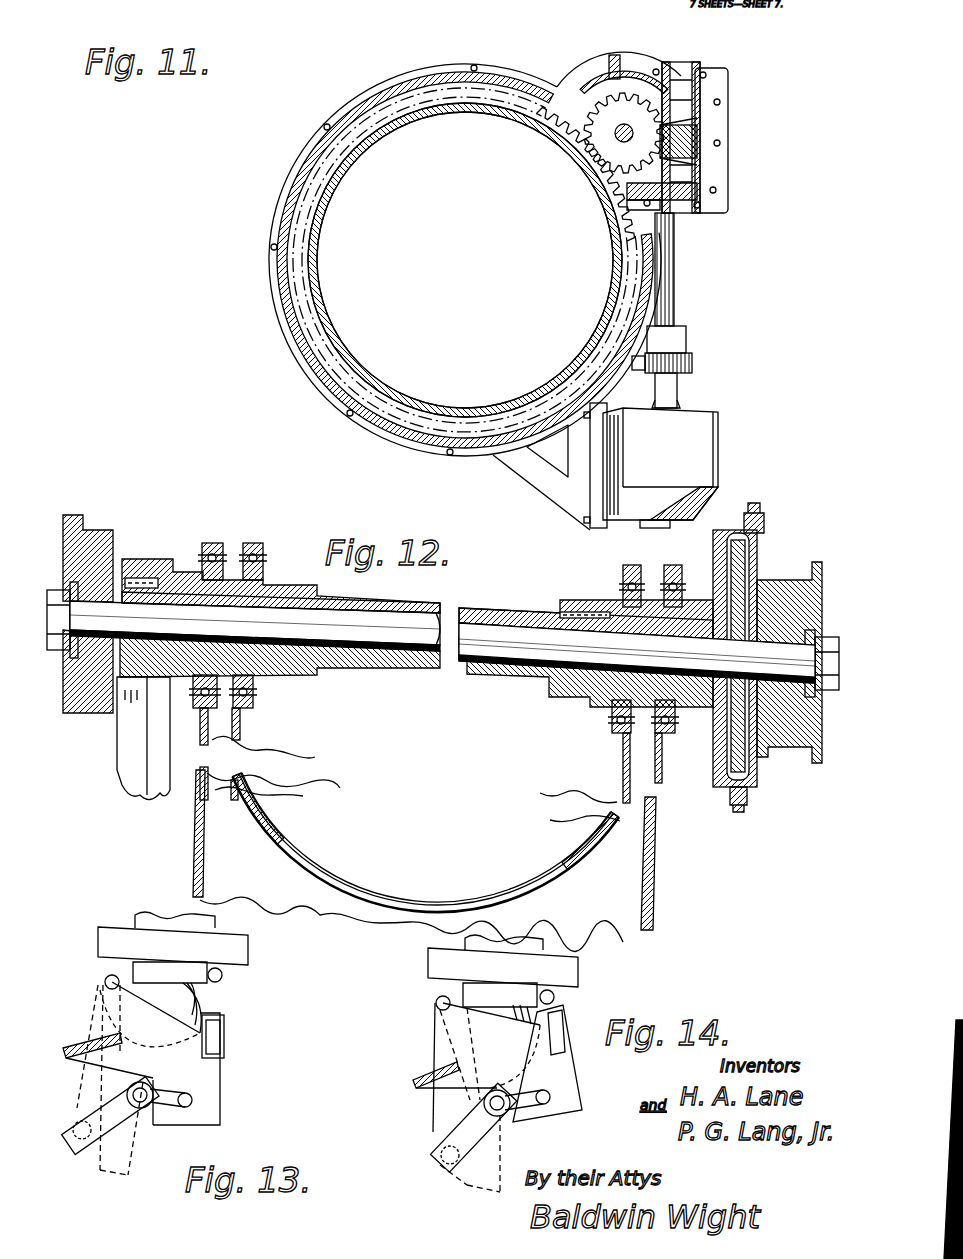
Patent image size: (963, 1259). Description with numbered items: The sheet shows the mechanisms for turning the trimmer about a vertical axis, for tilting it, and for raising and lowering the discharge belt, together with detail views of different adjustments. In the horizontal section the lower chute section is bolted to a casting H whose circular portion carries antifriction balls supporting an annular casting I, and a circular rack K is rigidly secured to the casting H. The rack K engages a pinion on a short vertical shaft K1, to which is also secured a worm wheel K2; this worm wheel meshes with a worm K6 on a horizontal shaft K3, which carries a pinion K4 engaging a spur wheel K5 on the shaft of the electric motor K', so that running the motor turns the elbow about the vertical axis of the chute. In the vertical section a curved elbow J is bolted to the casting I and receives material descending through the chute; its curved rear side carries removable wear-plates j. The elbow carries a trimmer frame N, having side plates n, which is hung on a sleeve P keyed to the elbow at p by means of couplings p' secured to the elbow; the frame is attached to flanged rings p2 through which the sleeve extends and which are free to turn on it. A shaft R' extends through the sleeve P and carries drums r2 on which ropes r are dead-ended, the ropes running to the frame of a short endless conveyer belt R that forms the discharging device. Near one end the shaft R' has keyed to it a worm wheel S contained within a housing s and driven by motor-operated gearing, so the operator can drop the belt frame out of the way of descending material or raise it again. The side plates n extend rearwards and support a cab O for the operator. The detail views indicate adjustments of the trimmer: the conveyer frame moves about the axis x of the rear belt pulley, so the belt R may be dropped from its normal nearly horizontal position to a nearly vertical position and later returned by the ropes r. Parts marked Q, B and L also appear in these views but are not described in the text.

In FIG. 11, the casting H is at (319, 288).
In FIG. 11, the annular casting I is at (271, 283).
In FIG. 11, the circular rack K is at (584, 184).
In FIG. 11, the electric motor K' is at (619, 81).
In FIG. 13, the electric motor K' is at (249, 986).
In FIG. 14, the electric motor K' is at (579, 992).
In FIG. 11, the short vertical shaft K1 is at (715, 470).
In FIG. 11, the worm wheel K2 is at (695, 72).
In FIG. 11, the horizontal shaft K3 is at (651, 240).
In FIG. 11, the pinion K4 is at (688, 364).
In FIG. 11, the spur wheel K5 is at (633, 380).
In FIG. 11, the worm K6 is at (697, 140).
In FIG. 12, the drums r2 is at (95, 530).
In FIG. 13, the drums r2 is at (105, 980).
In FIG. 14, the drums r2 is at (436, 1008).
In FIG. 12, the sleeve P is at (505, 608).
In FIG. 12, the keying point p is at (416, 633).
In FIG. 12, the flanged rings p2 is at (190, 565).
In FIG. 12, the couplings p' is at (434, 642).
In FIG. 12, the side plates n is at (220, 545).
In FIG. 12, the plate Q is at (125, 745).
In FIG. 12, the shaft R' is at (410, 684).
In FIG. 12, the worm wheel S is at (768, 573).
In FIG. 12, the housing s is at (744, 570).
In FIG. 12, the trimmer frame N is at (424, 861).
In FIG. 13, the trimmer frame N is at (85, 1050).
In FIG. 14, the trimmer frame N is at (440, 1075).
In FIG. 12, the curved elbow J is at (650, 560).
In FIG. 13, the curved elbow J is at (203, 1003).
In FIG. 14, the curved elbow J is at (440, 997).
In FIG. 12, the wear-plates j is at (260, 845).
In FIG. 13, the beam B is at (140, 915).
In FIG. 14, the beam B is at (518, 937).
In FIG. 13, the bar L is at (248, 950).
In FIG. 14, the bar L is at (578, 965).
In FIG. 13, the cab O is at (220, 1085).
In FIG. 14, the cab O is at (582, 1092).
In FIG. 13, the ropes r is at (80, 1083).
In FIG. 14, the ropes r is at (435, 1108).
In FIG. 13, the axis x is at (148, 1108).
In FIG. 14, the axis x is at (515, 1110).
In FIG. 13, the conveyer belt R is at (119, 1128).
In FIG. 14, the conveyer belt R is at (444, 1155).